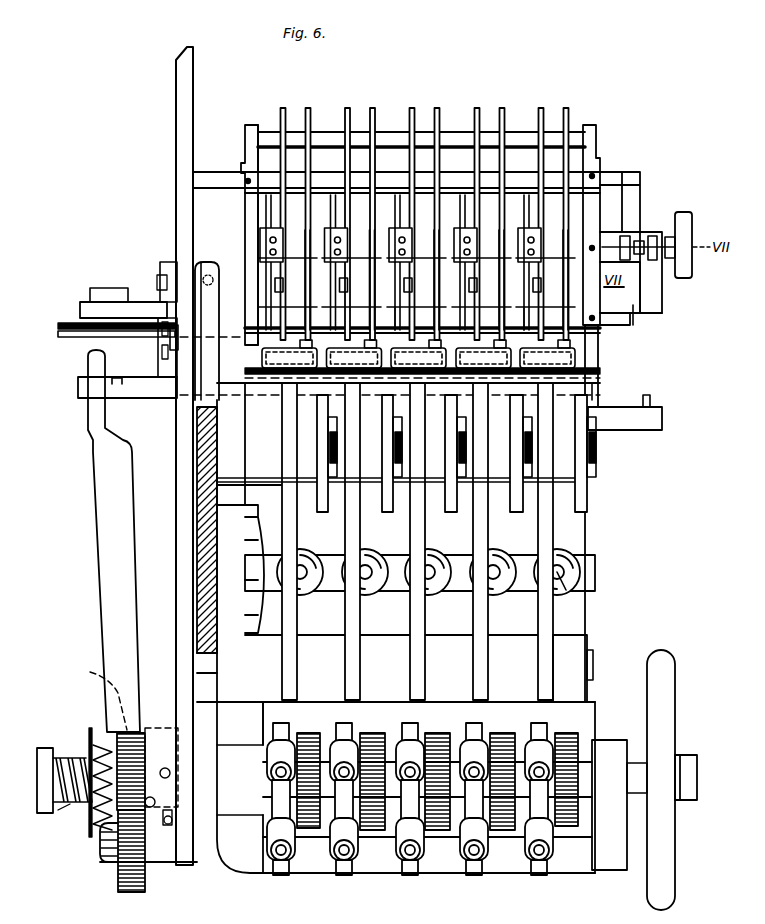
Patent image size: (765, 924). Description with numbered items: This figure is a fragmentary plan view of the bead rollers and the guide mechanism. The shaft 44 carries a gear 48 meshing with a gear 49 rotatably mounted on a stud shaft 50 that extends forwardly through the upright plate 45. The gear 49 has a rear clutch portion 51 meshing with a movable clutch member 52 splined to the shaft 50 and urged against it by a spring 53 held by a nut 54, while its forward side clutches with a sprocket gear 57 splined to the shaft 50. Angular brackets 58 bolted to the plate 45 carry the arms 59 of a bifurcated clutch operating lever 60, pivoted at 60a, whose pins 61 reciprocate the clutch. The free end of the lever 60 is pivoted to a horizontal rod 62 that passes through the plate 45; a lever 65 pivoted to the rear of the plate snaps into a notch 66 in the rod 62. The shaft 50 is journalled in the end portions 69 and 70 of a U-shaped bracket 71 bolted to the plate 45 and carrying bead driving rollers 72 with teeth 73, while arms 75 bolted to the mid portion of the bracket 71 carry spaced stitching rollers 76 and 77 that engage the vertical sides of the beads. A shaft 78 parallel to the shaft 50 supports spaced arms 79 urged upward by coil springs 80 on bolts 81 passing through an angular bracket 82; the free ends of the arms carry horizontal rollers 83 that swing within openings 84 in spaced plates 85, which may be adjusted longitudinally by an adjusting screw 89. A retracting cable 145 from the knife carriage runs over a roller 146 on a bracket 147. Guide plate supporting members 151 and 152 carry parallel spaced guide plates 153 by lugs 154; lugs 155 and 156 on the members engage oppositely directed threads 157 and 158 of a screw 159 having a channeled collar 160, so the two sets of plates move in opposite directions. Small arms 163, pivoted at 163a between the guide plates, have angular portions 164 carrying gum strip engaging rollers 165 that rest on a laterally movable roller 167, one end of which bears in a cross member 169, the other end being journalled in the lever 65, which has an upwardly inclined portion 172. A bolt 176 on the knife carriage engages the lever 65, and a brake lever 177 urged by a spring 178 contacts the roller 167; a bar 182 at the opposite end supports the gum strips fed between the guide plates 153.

The shaft 44 is at (112, 866).
The plate 45 is at (176, 597).
The gear 48 is at (135, 893).
The gear 49 is at (140, 745).
The stud shaft 50 is at (634, 762).
The rear clutch portion 51 is at (105, 745).
The movable clutch member 52 is at (88, 737).
The spring 53 is at (72, 800).
The nut 54 is at (40, 760).
The sprocket gear 57 is at (175, 816).
The angular brackets 58 is at (160, 745).
The arms 59 is at (90, 672).
The clutch operating lever 60 is at (128, 644).
The pivot 60a is at (155, 800).
The pins 61 is at (172, 773).
The horizontal rod 62 is at (137, 399).
The lever 65 is at (172, 380).
The notch 66 is at (121, 370).
The end portion 69 is at (252, 723).
The end portion 70 is at (620, 830).
The bracket 71 is at (500, 875).
The bead driving rollers 72 is at (310, 733).
The teeth 73 is at (569, 748).
The arms 75 is at (343, 876).
The stitching roller 76 is at (340, 834).
The stitching roller 77 is at (405, 750).
The shaft 78 is at (594, 665).
The arms 79 is at (490, 616).
The coil springs 80 is at (575, 556).
The bolts 81 is at (568, 592).
The angular bracket 82 is at (596, 578).
The horizontal rollers 83 is at (374, 483).
The openings 84 is at (584, 483).
The plates 85 is at (588, 501).
The adjusting screw 89 is at (650, 410).
The retracting cable 145 is at (58, 325).
The roller 146 is at (70, 337).
The bracket 147 is at (138, 302).
The guide plate supporting member 151 is at (634, 312).
The guide plate supporting member 152 is at (604, 180).
The guide plates 153 is at (308, 108).
The lugs 154 is at (310, 238).
The lug 155 is at (653, 288).
The lug 156 is at (617, 205).
The thread 157 is at (653, 235).
The thread 158 is at (627, 235).
The screw 159 is at (687, 241).
The collar 160 is at (641, 241).
The arms 163 is at (293, 236).
The pivot 163a is at (406, 236).
The angularly disposed portions 164 is at (285, 368).
The gum strip engaging rollers 165 is at (582, 367).
The roller 167 is at (549, 371).
The cross member 169 is at (592, 301).
The upwardly inclined portion 172 is at (172, 338).
The bolt 176 is at (180, 343).
The brake lever 177 is at (211, 310).
The spring 178 is at (214, 280).
The bar 182 is at (248, 200).